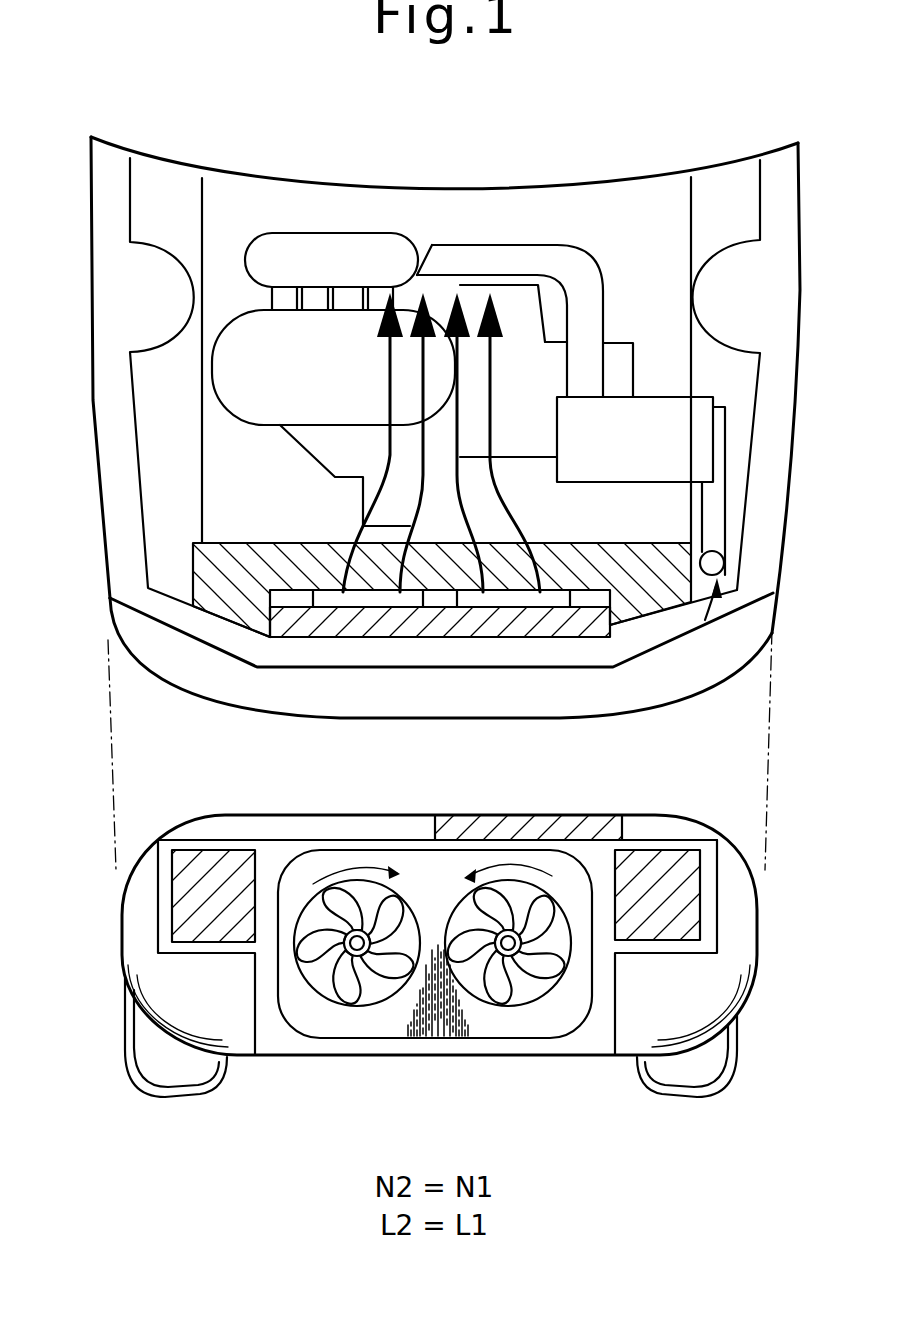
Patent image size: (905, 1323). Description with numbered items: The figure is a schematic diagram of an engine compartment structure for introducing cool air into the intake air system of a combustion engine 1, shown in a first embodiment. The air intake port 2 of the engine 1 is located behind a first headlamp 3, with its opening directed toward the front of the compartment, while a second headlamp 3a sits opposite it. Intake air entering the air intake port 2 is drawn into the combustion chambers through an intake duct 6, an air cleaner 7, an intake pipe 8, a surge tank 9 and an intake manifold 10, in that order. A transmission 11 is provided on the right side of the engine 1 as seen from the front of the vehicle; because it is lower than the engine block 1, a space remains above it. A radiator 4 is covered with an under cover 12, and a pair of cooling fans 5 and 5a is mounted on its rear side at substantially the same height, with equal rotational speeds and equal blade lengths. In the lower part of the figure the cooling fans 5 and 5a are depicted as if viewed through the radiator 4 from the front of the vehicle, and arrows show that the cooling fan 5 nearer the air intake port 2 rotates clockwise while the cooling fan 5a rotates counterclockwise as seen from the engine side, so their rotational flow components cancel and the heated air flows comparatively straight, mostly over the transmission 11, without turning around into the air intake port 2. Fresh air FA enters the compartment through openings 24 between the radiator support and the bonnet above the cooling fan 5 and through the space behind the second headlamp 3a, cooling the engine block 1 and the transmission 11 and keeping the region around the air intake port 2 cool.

The combustion engine 1 is at (227, 387).
The air intake port 2 is at (724, 565).
The first headlamp 3 is at (673, 640).
The second headlamp 3a is at (200, 640).
The radiator 4 is at (522, 633).
The cooling fan 5 is at (485, 605).
The cooling fan 5a is at (377, 607).
The intake duct 6 is at (727, 508).
The air cleaner 7 is at (670, 397).
The intake pipe 8 is at (562, 243).
The surge tank 9 is at (357, 232).
The intake manifold 10 is at (283, 298).
The transmission 11 is at (518, 302).
The under cover 12 is at (253, 607).
The openings 24 is at (572, 810).
The fresh air FA is at (722, 615).